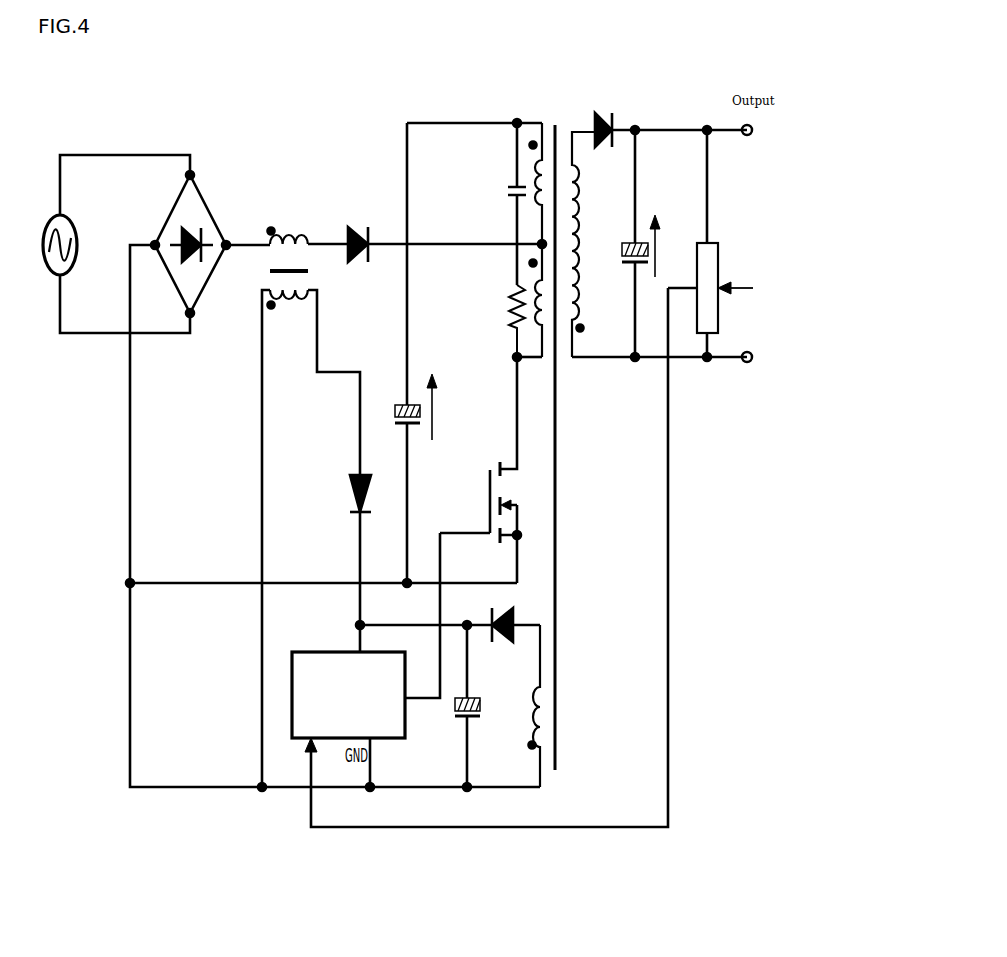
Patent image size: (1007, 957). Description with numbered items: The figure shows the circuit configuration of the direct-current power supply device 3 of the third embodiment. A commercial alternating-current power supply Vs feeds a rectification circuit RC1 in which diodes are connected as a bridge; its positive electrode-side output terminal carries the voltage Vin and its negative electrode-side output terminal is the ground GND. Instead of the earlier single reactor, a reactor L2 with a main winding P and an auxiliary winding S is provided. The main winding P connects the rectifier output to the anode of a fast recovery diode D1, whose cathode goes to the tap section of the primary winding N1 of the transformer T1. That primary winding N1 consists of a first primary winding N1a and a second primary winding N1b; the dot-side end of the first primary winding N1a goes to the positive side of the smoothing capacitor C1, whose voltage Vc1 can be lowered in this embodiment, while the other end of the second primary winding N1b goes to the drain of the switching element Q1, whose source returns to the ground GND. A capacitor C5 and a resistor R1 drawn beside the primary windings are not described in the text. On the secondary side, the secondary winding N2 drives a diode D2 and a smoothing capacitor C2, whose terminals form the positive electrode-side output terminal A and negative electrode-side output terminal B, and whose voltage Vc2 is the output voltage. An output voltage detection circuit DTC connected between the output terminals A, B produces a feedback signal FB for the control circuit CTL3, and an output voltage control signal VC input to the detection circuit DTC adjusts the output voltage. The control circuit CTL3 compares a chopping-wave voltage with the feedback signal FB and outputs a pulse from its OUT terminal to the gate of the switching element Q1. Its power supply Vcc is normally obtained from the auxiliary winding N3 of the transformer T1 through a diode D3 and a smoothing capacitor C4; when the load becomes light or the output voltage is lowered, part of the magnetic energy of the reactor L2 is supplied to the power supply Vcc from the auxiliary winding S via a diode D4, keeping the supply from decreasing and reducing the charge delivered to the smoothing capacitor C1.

The direct-current power supply device 3 is at (285, 89).
The commercial alternating-current power supply Vs is at (77, 238).
The rectification circuit RC1 is at (190, 219).
The positive electrode-side output voltage of the rectification circuit Vin is at (248, 263).
The reactor L2 is at (300, 278).
The main winding P is at (288, 229).
The auxiliary winding S is at (288, 316).
The fast recovery diode D1 is at (425, 228).
The diode D4 is at (351, 493).
The smoothing capacitor C1 is at (412, 418).
The voltage across C1 Vc1 is at (443, 407).
The capacitor C5 is at (508, 204).
The resistor R1 is at (510, 321).
The transformer T1 is at (536, 438).
The primary winding N1 is at (509, 257).
The first primary winding N1a is at (530, 162).
The second primary winding N1b is at (530, 281).
The secondary winding N2 is at (578, 262).
The auxiliary winding N3 is at (529, 706).
The diode D2 is at (671, 118).
The smoothing capacitor C2 is at (626, 243).
The voltage of the smoothing capacitor Vc2 is at (665, 246).
The positive electrode-side output terminal A is at (755, 132).
The negative electrode-side output terminal B is at (755, 358).
The output voltage detection circuit DTC is at (700, 335).
The output voltage control signal VC is at (778, 268).
The switching element Q1 is at (514, 470).
The negative electrode-side output terminal of the rectification circuit GND is at (321, 572).
The control circuit CTL3 is at (300, 650).
The power supply of the control circuit Vcc is at (436, 625).
The OUT terminal OUT is at (421, 715).
The feedback signal FB is at (303, 754).
The diode D3 is at (502, 641).
The smoothing capacitor C4 is at (474, 704).